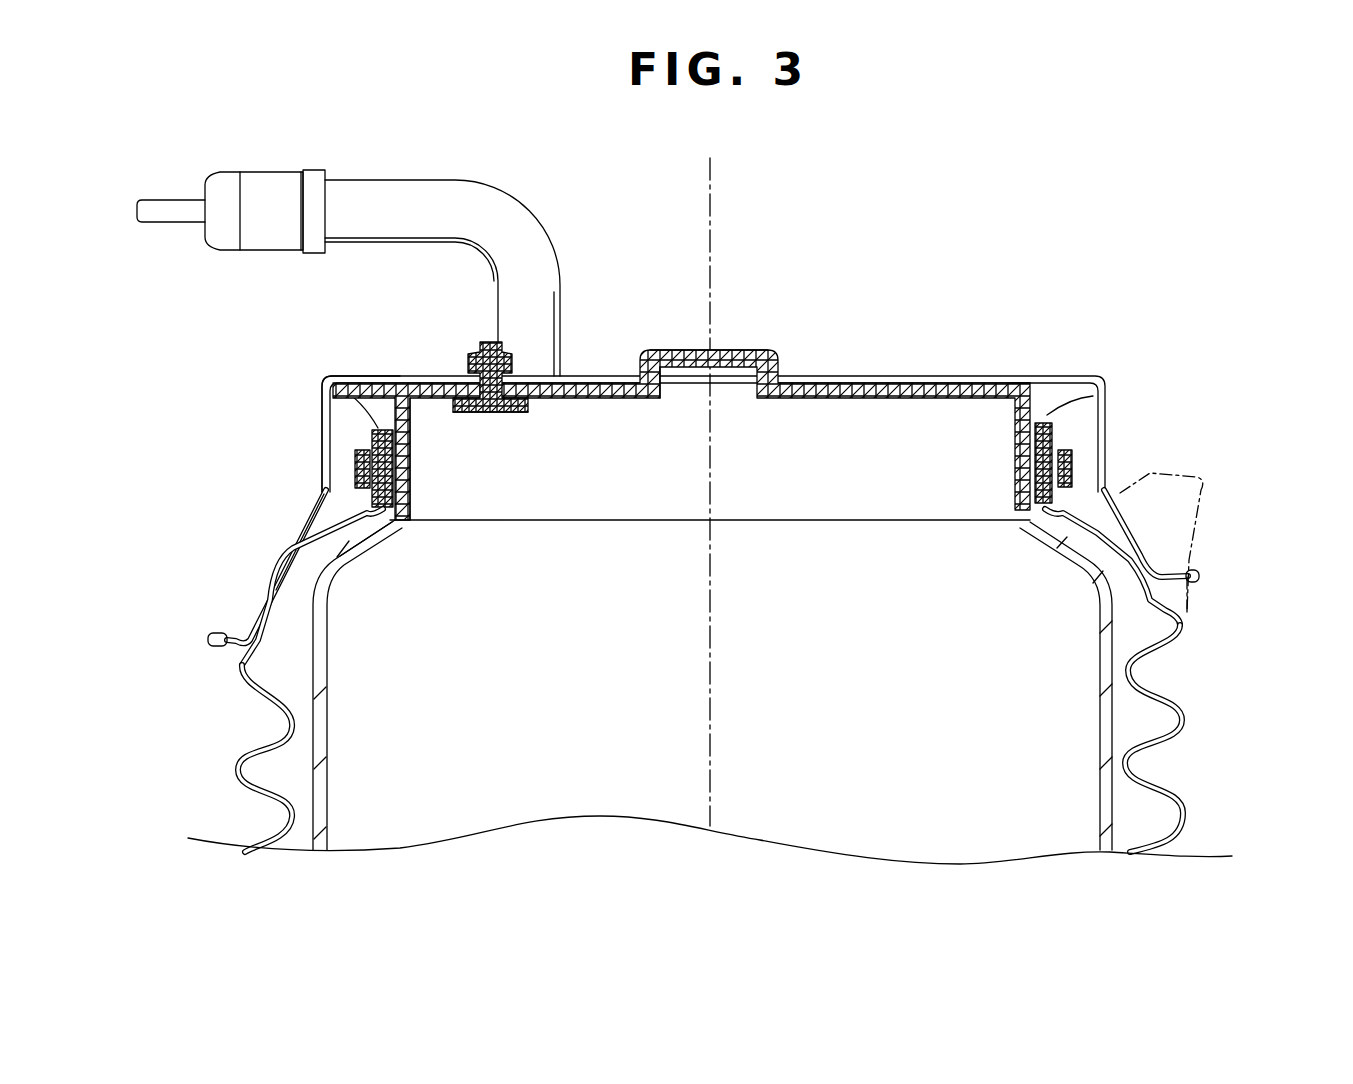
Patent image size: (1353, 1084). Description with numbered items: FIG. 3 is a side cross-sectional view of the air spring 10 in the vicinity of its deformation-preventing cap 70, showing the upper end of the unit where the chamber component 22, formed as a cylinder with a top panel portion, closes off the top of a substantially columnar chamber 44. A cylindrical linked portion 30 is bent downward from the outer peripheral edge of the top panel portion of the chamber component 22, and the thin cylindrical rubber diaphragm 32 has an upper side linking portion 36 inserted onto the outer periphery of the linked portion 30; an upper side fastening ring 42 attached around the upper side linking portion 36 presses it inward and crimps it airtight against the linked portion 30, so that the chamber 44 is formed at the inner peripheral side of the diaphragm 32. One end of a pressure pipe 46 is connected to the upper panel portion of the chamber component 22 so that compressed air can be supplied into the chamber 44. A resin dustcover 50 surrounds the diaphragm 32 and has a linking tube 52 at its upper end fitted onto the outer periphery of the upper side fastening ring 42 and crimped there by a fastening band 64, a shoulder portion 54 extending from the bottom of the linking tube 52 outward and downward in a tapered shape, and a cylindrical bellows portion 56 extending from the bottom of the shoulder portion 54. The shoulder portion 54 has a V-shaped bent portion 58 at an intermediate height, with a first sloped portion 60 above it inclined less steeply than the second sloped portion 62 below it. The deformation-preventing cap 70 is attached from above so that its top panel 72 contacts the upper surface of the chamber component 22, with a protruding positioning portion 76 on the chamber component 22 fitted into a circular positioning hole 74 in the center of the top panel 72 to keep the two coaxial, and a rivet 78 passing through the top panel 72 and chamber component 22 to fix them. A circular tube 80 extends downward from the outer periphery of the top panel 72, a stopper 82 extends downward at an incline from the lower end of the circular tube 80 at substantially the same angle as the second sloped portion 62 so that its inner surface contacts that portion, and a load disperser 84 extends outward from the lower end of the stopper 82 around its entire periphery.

The air spring 10 is at (1170, 306).
The chamber component 22 is at (1040, 376).
The linked portion 30 is at (410, 460).
The diaphragm 32 is at (328, 727).
The upper side linking portion 36 is at (1050, 415).
The upper side fastening ring 42 is at (326, 378).
The chamber 44 is at (710, 596).
The pressure pipe 46 is at (432, 180).
The dustcover 50 is at (1197, 830).
The linking tube 52 is at (323, 438).
The shoulder portion 54 is at (298, 574).
The bellows portion 56 is at (1187, 712).
The bent portion 58 is at (285, 540).
The first sloped portion 60 is at (368, 556).
The second sloped portion 62 is at (300, 605).
The fastening band 64 is at (325, 473).
The deformation-preventing cap 70 is at (1102, 373).
The top panel 72 is at (912, 376).
The positioning hole 74 is at (664, 400).
The positioning portion 76 is at (775, 350).
The rivet 78 is at (527, 405).
The circular tube 80 is at (320, 405).
The stopper 82 is at (269, 578).
The load disperser 84 is at (215, 646).